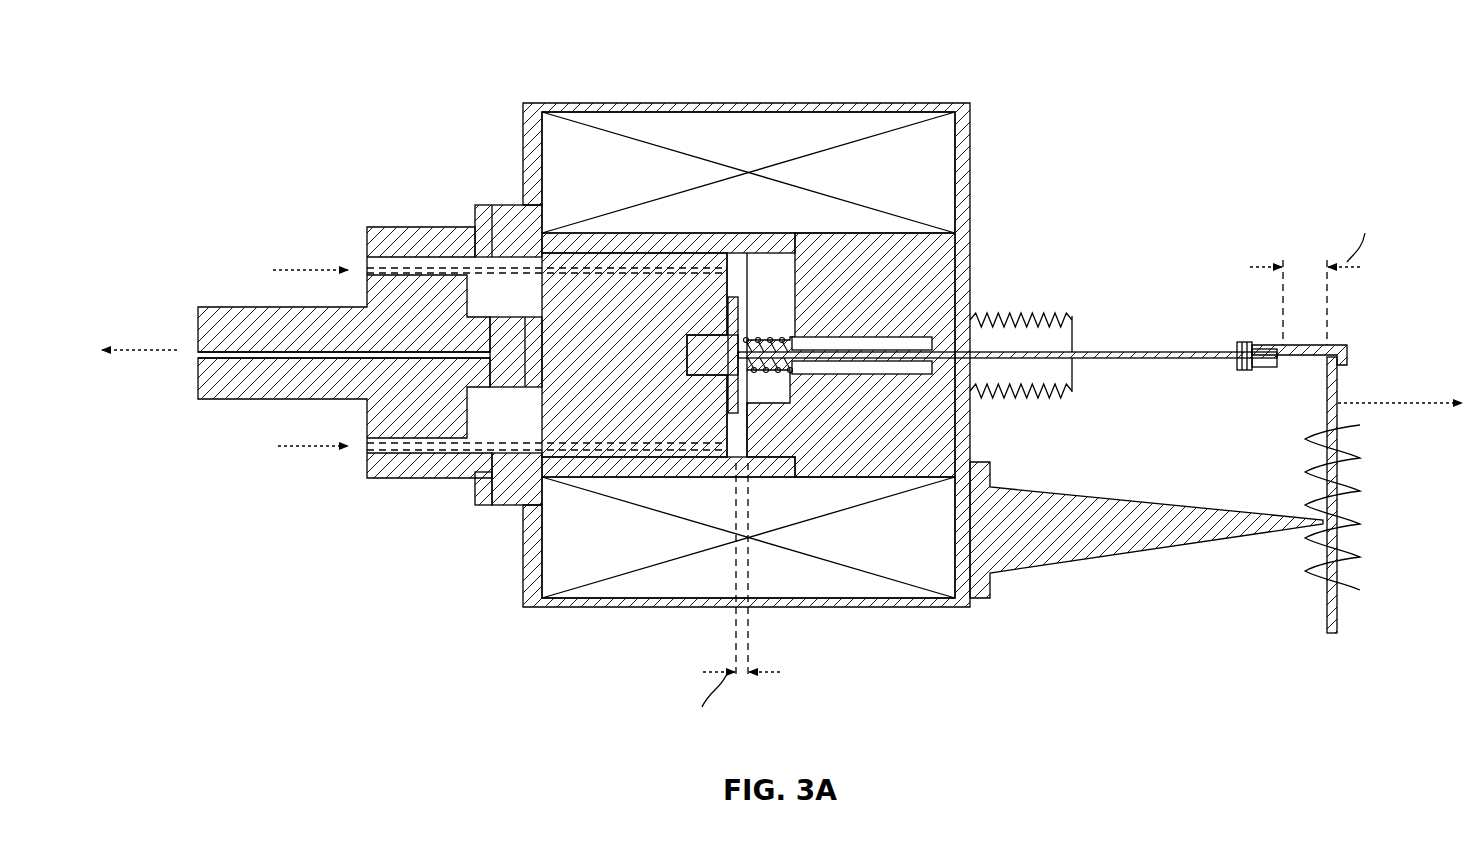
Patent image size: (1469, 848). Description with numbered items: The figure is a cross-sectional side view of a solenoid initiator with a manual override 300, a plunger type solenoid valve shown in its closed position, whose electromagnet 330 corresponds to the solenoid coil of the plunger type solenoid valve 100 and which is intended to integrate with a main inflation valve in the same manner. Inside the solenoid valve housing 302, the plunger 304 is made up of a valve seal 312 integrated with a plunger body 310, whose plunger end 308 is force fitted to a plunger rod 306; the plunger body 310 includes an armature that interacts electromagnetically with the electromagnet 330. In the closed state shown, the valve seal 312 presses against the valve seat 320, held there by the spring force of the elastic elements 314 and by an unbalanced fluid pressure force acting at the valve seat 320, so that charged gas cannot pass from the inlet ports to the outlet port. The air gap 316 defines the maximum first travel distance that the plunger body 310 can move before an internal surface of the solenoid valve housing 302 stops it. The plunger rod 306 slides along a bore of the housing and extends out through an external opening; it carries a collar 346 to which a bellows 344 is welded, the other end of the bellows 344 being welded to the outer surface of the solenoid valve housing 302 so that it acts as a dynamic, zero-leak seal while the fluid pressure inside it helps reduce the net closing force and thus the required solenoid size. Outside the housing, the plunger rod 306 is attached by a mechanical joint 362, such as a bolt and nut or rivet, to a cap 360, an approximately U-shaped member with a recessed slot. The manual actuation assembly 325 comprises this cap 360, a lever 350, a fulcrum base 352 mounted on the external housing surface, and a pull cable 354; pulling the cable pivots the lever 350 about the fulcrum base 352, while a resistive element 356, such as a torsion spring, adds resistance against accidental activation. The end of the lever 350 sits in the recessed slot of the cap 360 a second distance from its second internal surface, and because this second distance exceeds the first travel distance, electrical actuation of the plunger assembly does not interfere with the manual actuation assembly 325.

The plunger type solenoid valve 100 is at (1310, 106).
The solenoid initiator with a manual override 300 is at (782, 390).
The solenoid valve housing 302 is at (973, 178).
The plunger 304 is at (625, 428).
The plunger rod 306 is at (1190, 352).
The plunger end 308 is at (693, 337).
The plunger body 310 is at (540, 430).
The valve seal 312 is at (490, 337).
The elastic elements 314 is at (760, 338).
The air gap 316 is at (737, 270).
The valve seat 320 is at (487, 355).
The manual actuation assembly 325 is at (1167, 250).
The electromagnet 330 is at (603, 103).
The bellows 344 is at (1020, 312).
The collar 346 is at (1075, 322).
The lever 350 is at (1325, 615).
The fulcrum base 352 is at (1077, 560).
The pull cable 354 is at (1407, 403).
The resistive element 356 is at (1345, 580).
The cap 360 is at (1347, 350).
The mechanical joint 362 is at (1245, 372).